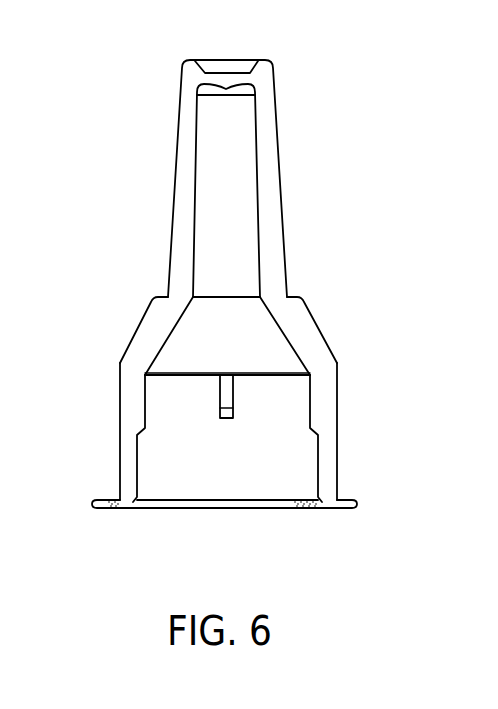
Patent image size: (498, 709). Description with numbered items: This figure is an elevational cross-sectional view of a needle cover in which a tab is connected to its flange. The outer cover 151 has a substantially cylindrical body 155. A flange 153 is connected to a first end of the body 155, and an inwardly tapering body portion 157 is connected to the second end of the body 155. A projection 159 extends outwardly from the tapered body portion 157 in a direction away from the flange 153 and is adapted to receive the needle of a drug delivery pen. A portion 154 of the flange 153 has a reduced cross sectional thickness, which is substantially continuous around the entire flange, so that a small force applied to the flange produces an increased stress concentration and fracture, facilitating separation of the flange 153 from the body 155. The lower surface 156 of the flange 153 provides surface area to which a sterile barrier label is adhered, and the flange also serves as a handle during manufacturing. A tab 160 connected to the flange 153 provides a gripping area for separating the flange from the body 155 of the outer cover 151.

The outer cover 151 is at (128, 322).
The flange 153 is at (348, 498).
The reduced cross sectional thickness portion 154 is at (115, 510).
The body 155 is at (337, 423).
The lower surface 156 is at (315, 510).
The inwardly tapering body portion 157 is at (315, 323).
The projection 159 is at (275, 122).
The tab 160 is at (100, 498).